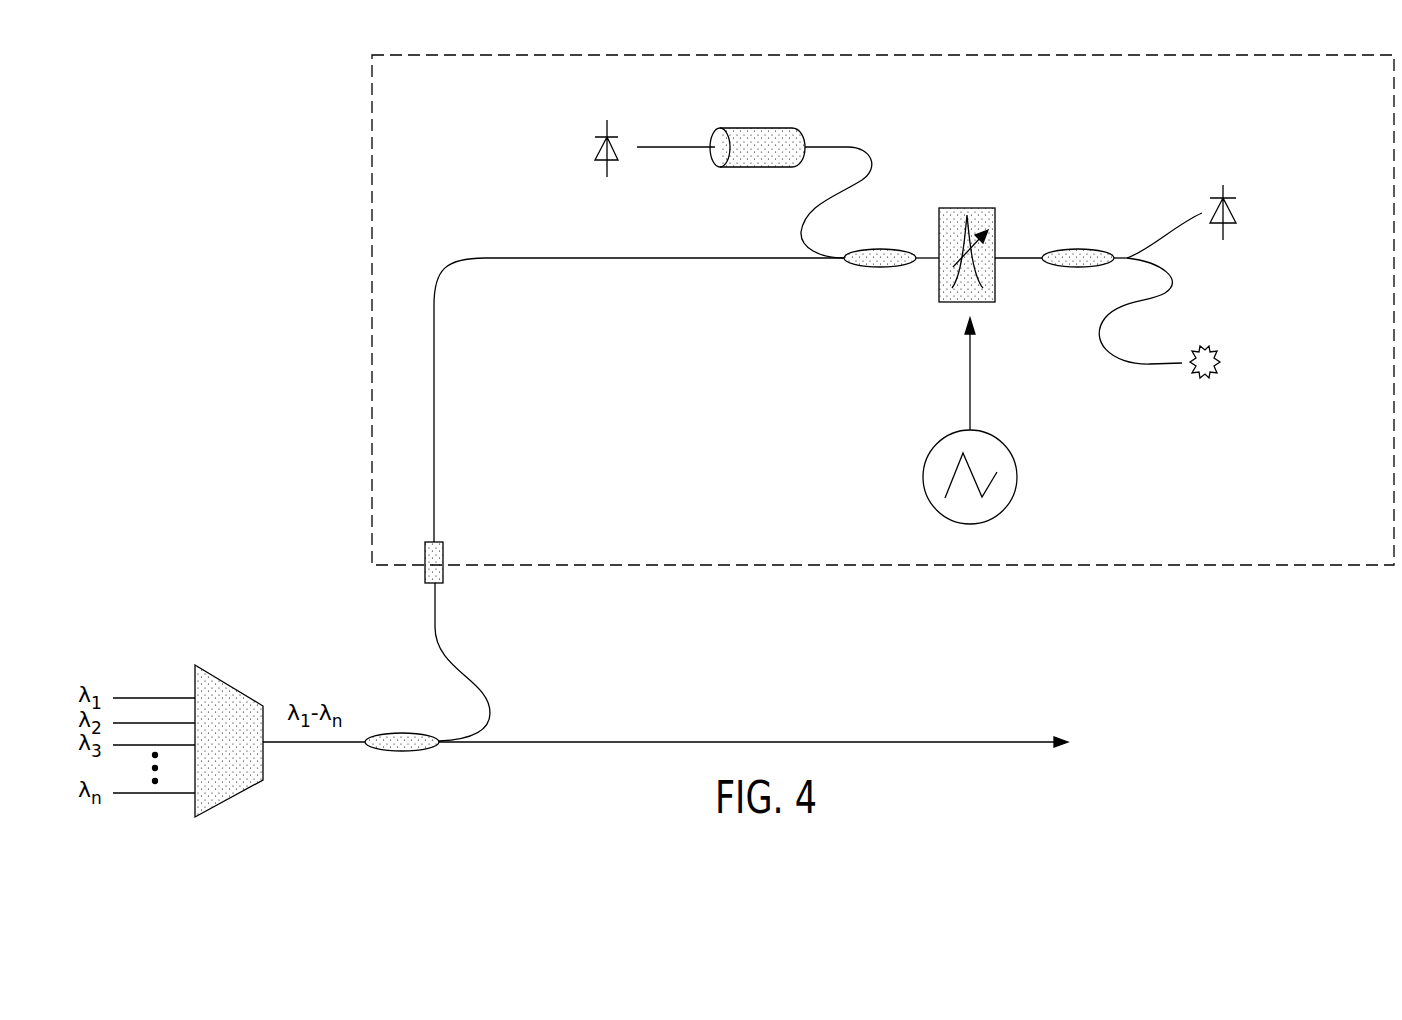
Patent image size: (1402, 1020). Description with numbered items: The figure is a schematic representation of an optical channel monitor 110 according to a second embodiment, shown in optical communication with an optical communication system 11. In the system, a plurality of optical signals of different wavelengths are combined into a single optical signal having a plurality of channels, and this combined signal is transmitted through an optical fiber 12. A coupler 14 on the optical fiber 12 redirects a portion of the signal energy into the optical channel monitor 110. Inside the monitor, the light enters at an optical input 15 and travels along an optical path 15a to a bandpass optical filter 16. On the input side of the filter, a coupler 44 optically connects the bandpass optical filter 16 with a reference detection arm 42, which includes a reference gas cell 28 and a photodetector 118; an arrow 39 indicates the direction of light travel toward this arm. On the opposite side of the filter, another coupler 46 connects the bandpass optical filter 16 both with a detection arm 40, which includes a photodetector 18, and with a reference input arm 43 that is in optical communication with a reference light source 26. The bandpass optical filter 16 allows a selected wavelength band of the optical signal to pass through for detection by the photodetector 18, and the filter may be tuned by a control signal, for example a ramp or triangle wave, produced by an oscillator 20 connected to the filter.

The optical channel monitor 110 is at (361, 270).
The optical path 15a is at (434, 362).
The optical input 15 is at (443, 552).
The coupler 14 is at (402, 733).
The optical fiber 12 is at (695, 740).
The optical communication system 11 is at (757, 709).
The photodetector 118 is at (595, 150).
The reference gas cell 28 is at (767, 128).
The reference detection arm 42 is at (800, 222).
The signal direction arrow 39 is at (871, 182).
The coupler 44 is at (880, 268).
The bandpass optical filter 16 is at (967, 208).
The oscillator 20 is at (1017, 477).
The coupler 46 is at (1078, 268).
The detection arm 40 is at (1168, 238).
The photodetector 18 is at (1236, 213).
The reference input arm 43 is at (1140, 300).
The reference light source 26 is at (1205, 378).